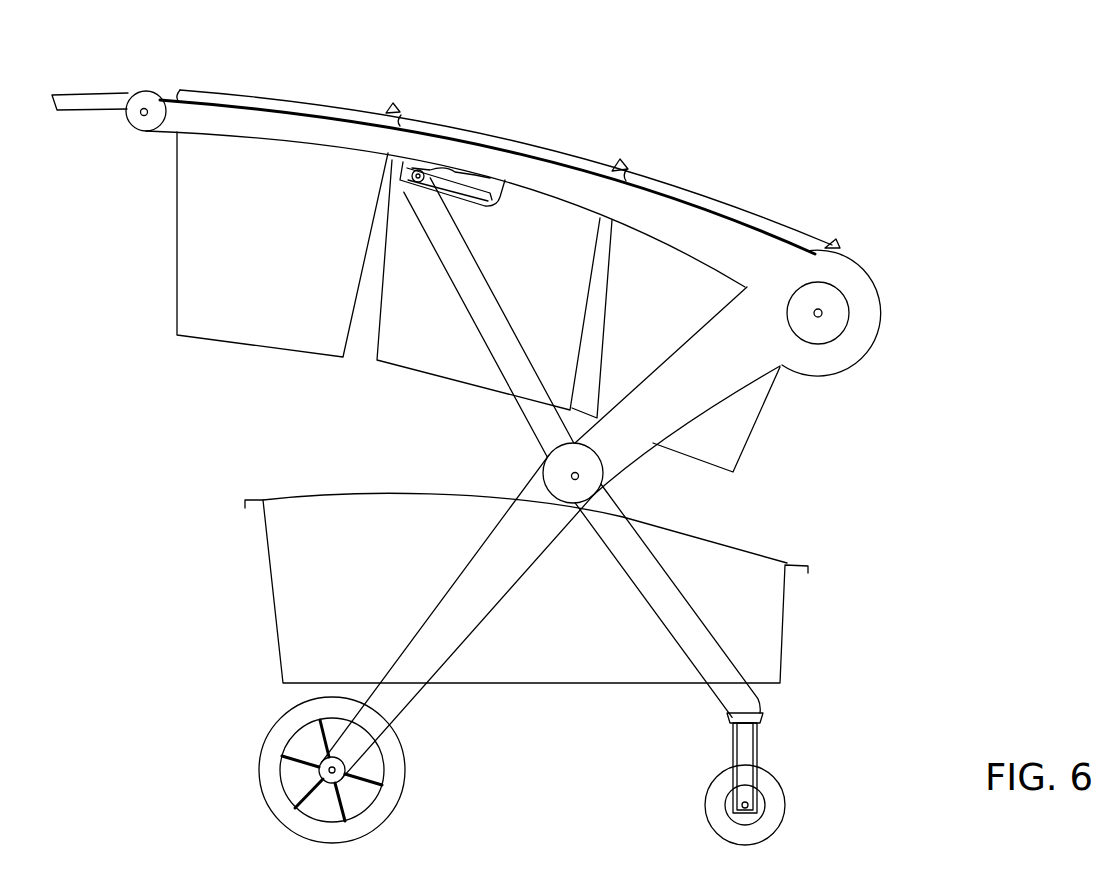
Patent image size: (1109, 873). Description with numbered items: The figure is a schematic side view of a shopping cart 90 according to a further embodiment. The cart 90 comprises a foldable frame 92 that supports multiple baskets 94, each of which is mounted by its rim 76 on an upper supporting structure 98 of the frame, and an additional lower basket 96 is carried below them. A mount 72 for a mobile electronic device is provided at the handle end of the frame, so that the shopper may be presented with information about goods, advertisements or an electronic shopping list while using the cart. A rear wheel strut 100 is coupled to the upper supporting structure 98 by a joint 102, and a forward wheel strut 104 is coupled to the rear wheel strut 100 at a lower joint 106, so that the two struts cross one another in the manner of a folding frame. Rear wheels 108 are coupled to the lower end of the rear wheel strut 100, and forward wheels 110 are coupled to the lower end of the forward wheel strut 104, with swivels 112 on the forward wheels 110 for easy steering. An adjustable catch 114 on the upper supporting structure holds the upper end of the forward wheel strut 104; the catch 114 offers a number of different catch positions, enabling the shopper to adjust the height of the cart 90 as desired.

The mount 72 is at (82, 93).
The rims 76 is at (342, 104).
The shopping cart 90 is at (923, 160).
The foldable frame 92 is at (146, 132).
The baskets 94 is at (240, 347).
The lower basket 96 is at (264, 553).
The upper supporting structure 98 is at (673, 213).
The rear wheel strut 100 is at (625, 457).
The joint 102 is at (822, 313).
The forward wheel strut 104 is at (540, 438).
The lower joint 106 is at (571, 476).
The rear wheels 108 is at (407, 793).
The forward wheels 110 is at (706, 814).
The swivels 112 is at (764, 714).
The adjustable catch 114 is at (475, 173).